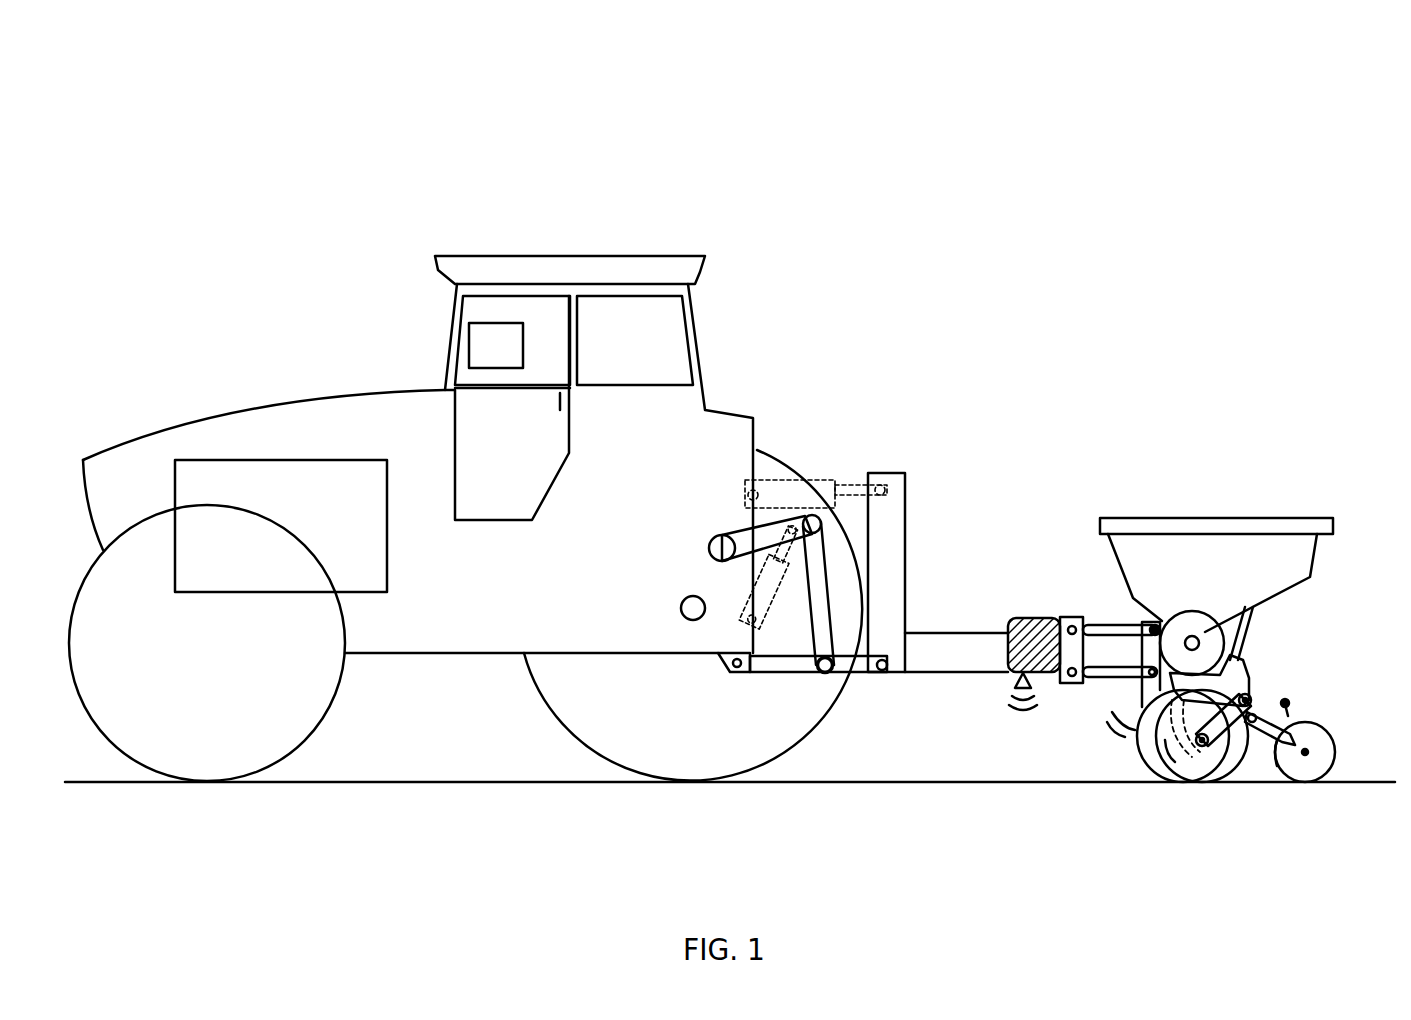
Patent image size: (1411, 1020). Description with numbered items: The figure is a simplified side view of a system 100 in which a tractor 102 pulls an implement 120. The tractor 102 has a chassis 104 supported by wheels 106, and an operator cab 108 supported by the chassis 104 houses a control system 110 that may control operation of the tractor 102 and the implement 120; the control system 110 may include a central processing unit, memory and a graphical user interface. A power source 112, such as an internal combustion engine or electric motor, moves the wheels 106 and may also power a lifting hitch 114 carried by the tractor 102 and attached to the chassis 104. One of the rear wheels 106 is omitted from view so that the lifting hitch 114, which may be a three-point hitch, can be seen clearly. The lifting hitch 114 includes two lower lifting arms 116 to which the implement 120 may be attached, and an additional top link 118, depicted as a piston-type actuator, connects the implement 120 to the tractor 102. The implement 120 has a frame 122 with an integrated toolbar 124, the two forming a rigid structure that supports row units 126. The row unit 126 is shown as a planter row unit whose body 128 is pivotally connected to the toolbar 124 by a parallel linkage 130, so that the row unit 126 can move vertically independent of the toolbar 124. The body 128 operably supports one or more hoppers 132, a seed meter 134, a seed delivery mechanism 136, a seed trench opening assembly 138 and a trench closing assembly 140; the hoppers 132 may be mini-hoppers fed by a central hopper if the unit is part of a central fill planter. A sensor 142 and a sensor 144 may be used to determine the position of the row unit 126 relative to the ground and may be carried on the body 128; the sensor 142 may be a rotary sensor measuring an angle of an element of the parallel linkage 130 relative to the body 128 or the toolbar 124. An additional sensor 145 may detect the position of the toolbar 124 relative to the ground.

The system 100 is at (392, 146).
The tractor 102 is at (255, 386).
The chassis 104 is at (425, 613).
The wheels 106 is at (238, 742).
The operator cab 108 is at (607, 332).
The control system 110 is at (468, 343).
The power source 112 is at (175, 475).
The lifting hitch 114 is at (864, 684).
The lower lifting arms 116 is at (802, 672).
The top link 118 is at (858, 487).
The implement 120 is at (983, 428).
The frame 122 is at (893, 523).
The toolbar 124 is at (1033, 618).
The row unit 126 is at (1238, 474).
The body 128 is at (1250, 667).
The parallel linkage 130 is at (1097, 625).
The hoppers 132 is at (1308, 550).
The seed meter 134 is at (1203, 640).
The seed delivery mechanism 136 is at (1176, 770).
The seed trench opening assembly 138 is at (1143, 760).
The trench closing assembly 140 is at (1297, 758).
The sensor 142 is at (1158, 627).
The sensor 144 is at (1136, 697).
The additional sensor 145 is at (1022, 673).